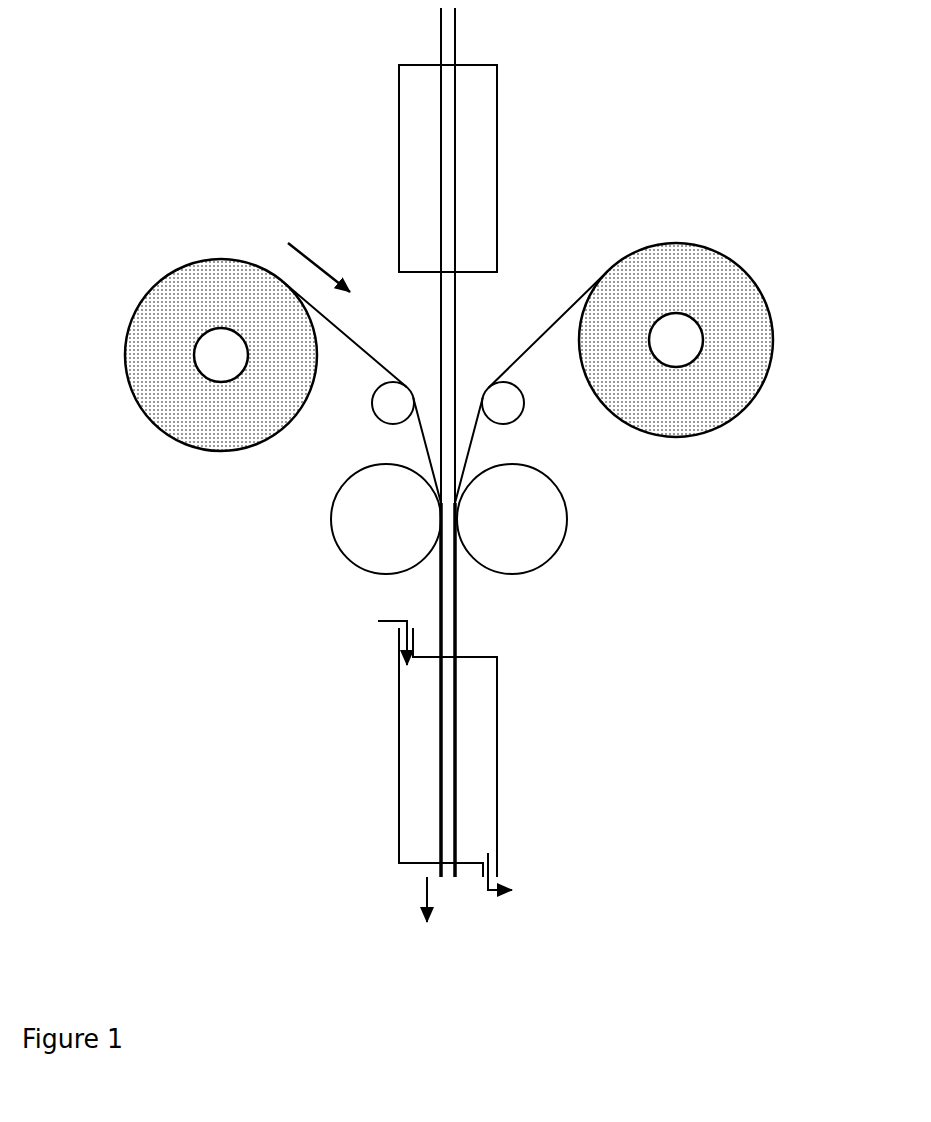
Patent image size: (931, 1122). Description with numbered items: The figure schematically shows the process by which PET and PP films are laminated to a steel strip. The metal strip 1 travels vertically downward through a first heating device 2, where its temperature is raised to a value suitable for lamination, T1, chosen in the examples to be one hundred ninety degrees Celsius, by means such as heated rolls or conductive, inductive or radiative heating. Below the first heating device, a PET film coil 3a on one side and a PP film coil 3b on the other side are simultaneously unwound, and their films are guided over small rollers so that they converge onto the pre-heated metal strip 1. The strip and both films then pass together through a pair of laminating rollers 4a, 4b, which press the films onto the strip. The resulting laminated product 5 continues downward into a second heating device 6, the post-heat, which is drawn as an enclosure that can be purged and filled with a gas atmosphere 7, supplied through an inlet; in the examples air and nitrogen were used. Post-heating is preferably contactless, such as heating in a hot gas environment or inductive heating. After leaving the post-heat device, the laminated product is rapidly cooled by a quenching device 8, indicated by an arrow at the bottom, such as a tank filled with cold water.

The metal strip 1 is at (458, 23).
The first heating device 2 is at (499, 107).
The PET film coil 3a is at (183, 355).
The PP film coil 3b is at (716, 340).
The laminating roller 4a is at (348, 519).
The laminating roller 4b is at (551, 519).
The laminated product 5 is at (458, 630).
The second heating device 6 is at (499, 738).
The gas atmosphere 7 is at (372, 635).
The quenching device 8 is at (430, 927).